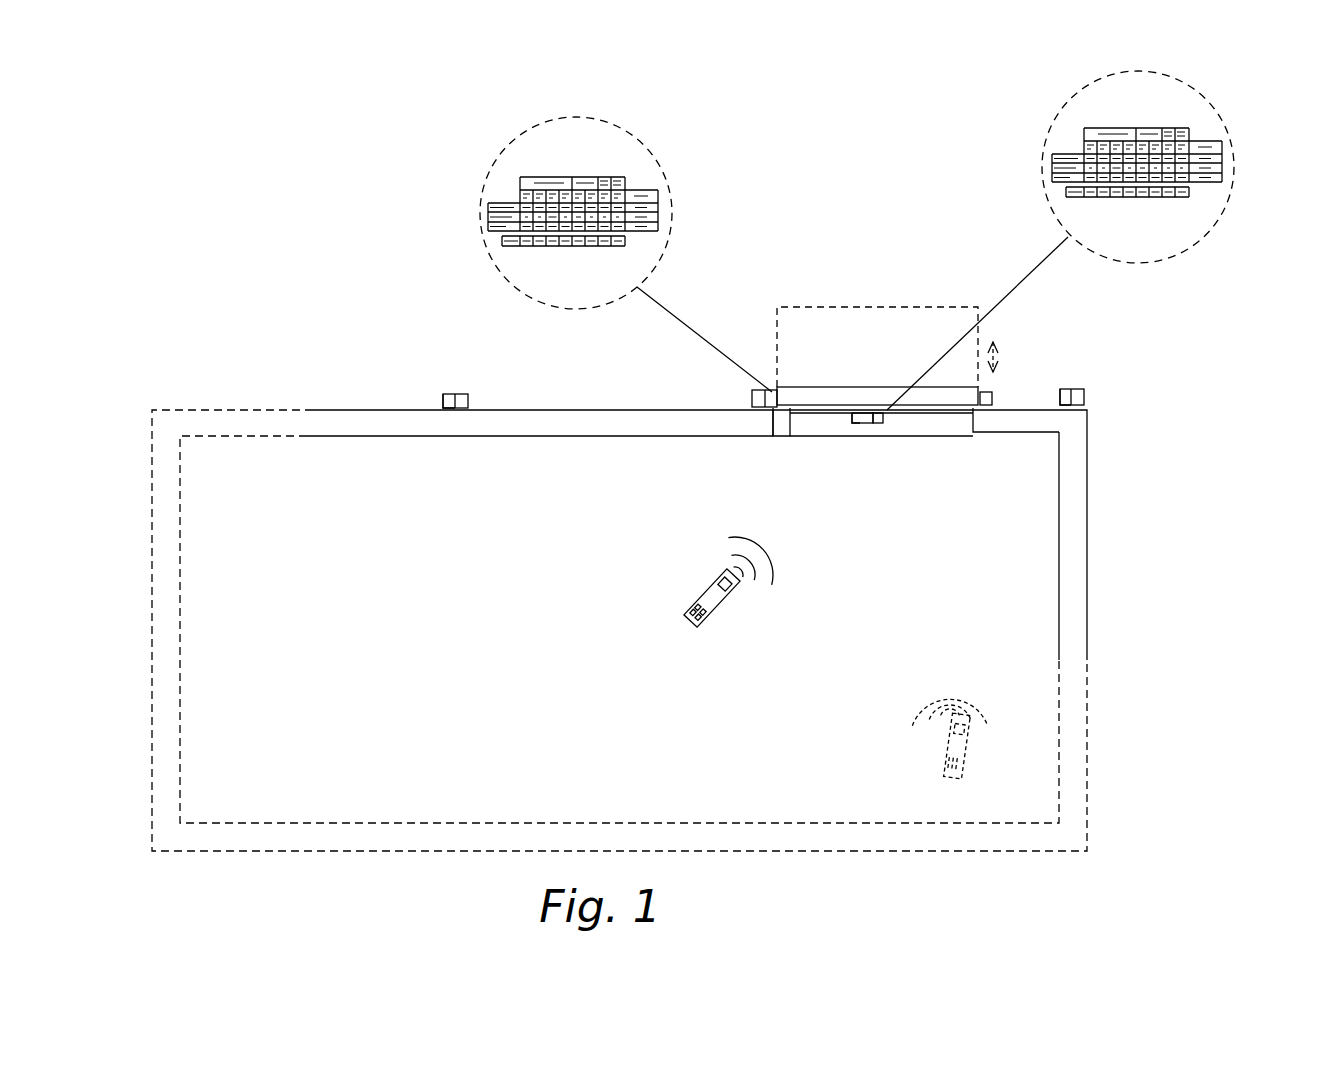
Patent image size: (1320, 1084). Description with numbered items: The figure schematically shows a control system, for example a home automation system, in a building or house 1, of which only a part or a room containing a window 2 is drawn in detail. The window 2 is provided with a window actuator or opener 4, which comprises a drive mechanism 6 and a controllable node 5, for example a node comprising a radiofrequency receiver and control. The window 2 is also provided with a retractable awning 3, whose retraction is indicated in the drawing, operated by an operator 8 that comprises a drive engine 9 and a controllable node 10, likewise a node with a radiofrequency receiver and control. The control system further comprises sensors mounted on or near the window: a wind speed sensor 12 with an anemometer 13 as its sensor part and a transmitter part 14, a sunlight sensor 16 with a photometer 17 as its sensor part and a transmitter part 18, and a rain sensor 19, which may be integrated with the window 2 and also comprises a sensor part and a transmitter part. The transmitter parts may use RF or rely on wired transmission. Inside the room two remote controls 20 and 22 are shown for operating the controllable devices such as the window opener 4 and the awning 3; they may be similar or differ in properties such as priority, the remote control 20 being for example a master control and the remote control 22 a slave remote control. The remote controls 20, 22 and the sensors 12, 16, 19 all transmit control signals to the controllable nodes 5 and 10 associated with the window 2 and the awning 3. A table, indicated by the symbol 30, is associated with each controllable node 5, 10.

The building, house or the like 1 is at (1087, 630).
The window 2 is at (942, 413).
The awning 3 is at (875, 387).
The window actuator, operator or opener 4 is at (863, 436).
The controllable node 5 is at (883, 423).
The drive mechanism 6 is at (852, 422).
The operator 8 is at (776, 377).
The drive engine 9 is at (773, 410).
The controllable node 10 is at (752, 396).
The wind speed sensor 12 is at (1090, 389).
The anemometer 13 is at (1084, 405).
The transmitter part 14 is at (1063, 405).
The sunlight sensor 16 is at (447, 382).
The photometer 17 is at (468, 400).
The transmitter part 18 is at (443, 399).
The rain sensor 19 is at (1000, 395).
The remote control 20 is at (703, 617).
The remote control 22 is at (947, 748).
The table symbol 30 is at (594, 288).